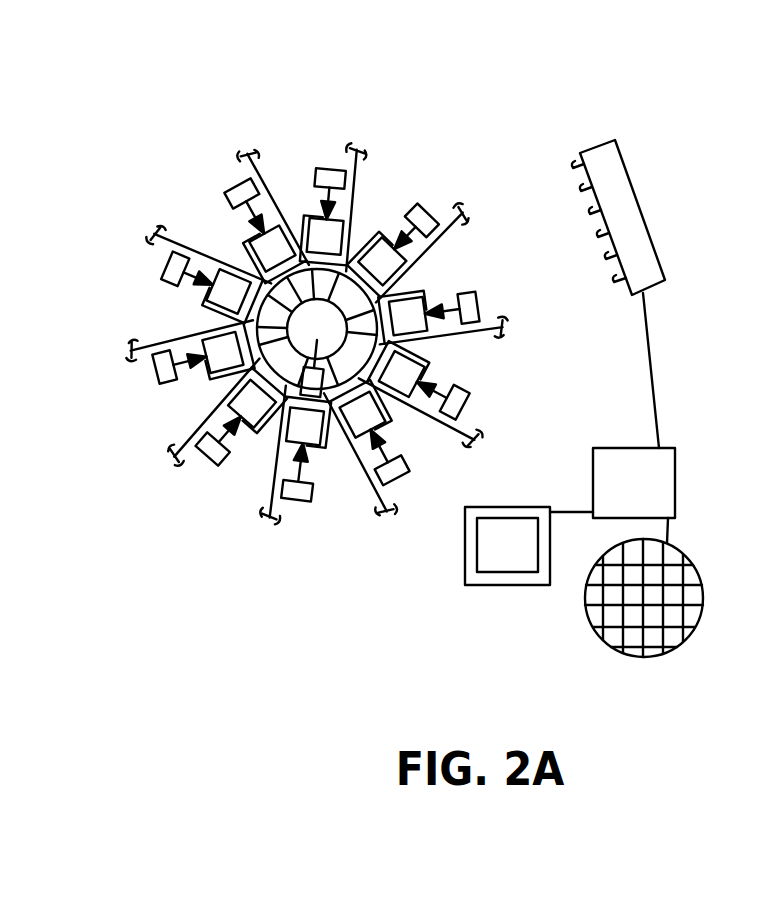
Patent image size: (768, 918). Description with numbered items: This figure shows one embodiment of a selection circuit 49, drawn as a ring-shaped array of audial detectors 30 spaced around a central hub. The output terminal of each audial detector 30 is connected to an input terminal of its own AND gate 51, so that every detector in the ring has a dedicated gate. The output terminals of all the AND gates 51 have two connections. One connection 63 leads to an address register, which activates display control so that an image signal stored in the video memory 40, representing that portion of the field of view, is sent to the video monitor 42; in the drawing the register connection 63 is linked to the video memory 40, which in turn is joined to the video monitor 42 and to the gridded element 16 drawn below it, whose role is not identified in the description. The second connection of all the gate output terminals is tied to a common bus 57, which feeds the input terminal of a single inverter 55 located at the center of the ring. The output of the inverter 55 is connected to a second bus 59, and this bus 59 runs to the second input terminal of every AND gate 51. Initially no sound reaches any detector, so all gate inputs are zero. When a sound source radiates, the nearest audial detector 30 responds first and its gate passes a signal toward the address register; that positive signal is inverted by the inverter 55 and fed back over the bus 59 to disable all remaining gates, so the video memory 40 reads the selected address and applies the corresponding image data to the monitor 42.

The selection circuit 49 is at (397, 146).
The inverter 55 is at (317, 329).
The bus 59 is at (380, 230).
The bus 57 is at (432, 364).
The AND gate 51 is at (373, 425).
The audial detector 30 is at (210, 450).
The address register connection 63 is at (601, 160).
The video memory 40 is at (617, 497).
The video monitor 42 is at (490, 562).
The wafer 16 is at (660, 640).